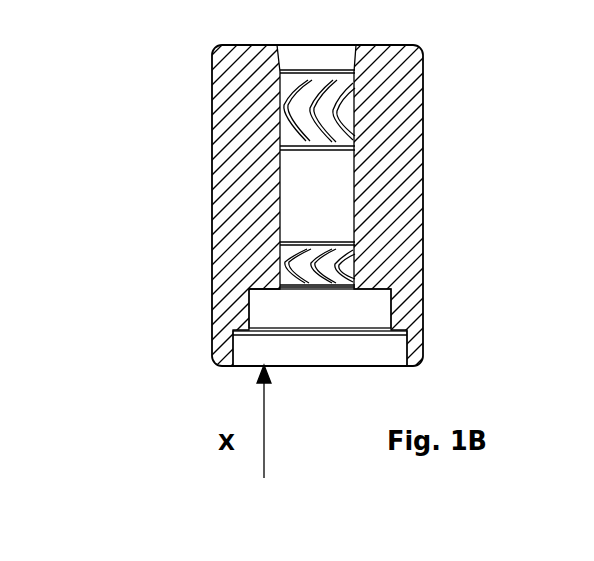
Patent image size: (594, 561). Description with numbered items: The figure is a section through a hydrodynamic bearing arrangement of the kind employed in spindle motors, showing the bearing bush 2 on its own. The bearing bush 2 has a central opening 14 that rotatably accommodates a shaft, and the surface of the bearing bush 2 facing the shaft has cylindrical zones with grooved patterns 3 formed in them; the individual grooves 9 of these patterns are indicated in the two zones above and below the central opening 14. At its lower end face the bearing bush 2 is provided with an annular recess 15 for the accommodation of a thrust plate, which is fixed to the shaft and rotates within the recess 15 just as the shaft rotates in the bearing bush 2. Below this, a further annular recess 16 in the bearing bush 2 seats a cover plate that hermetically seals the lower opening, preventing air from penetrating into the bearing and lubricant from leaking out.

The bearing bush 2 is at (397, 92).
The grooved pattern 3 is at (330, 130).
The central opening 14 is at (330, 204).
The annular recess 15 is at (368, 317).
The further annular recess 16 is at (368, 352).
The grooves 9 is at (268, 289).